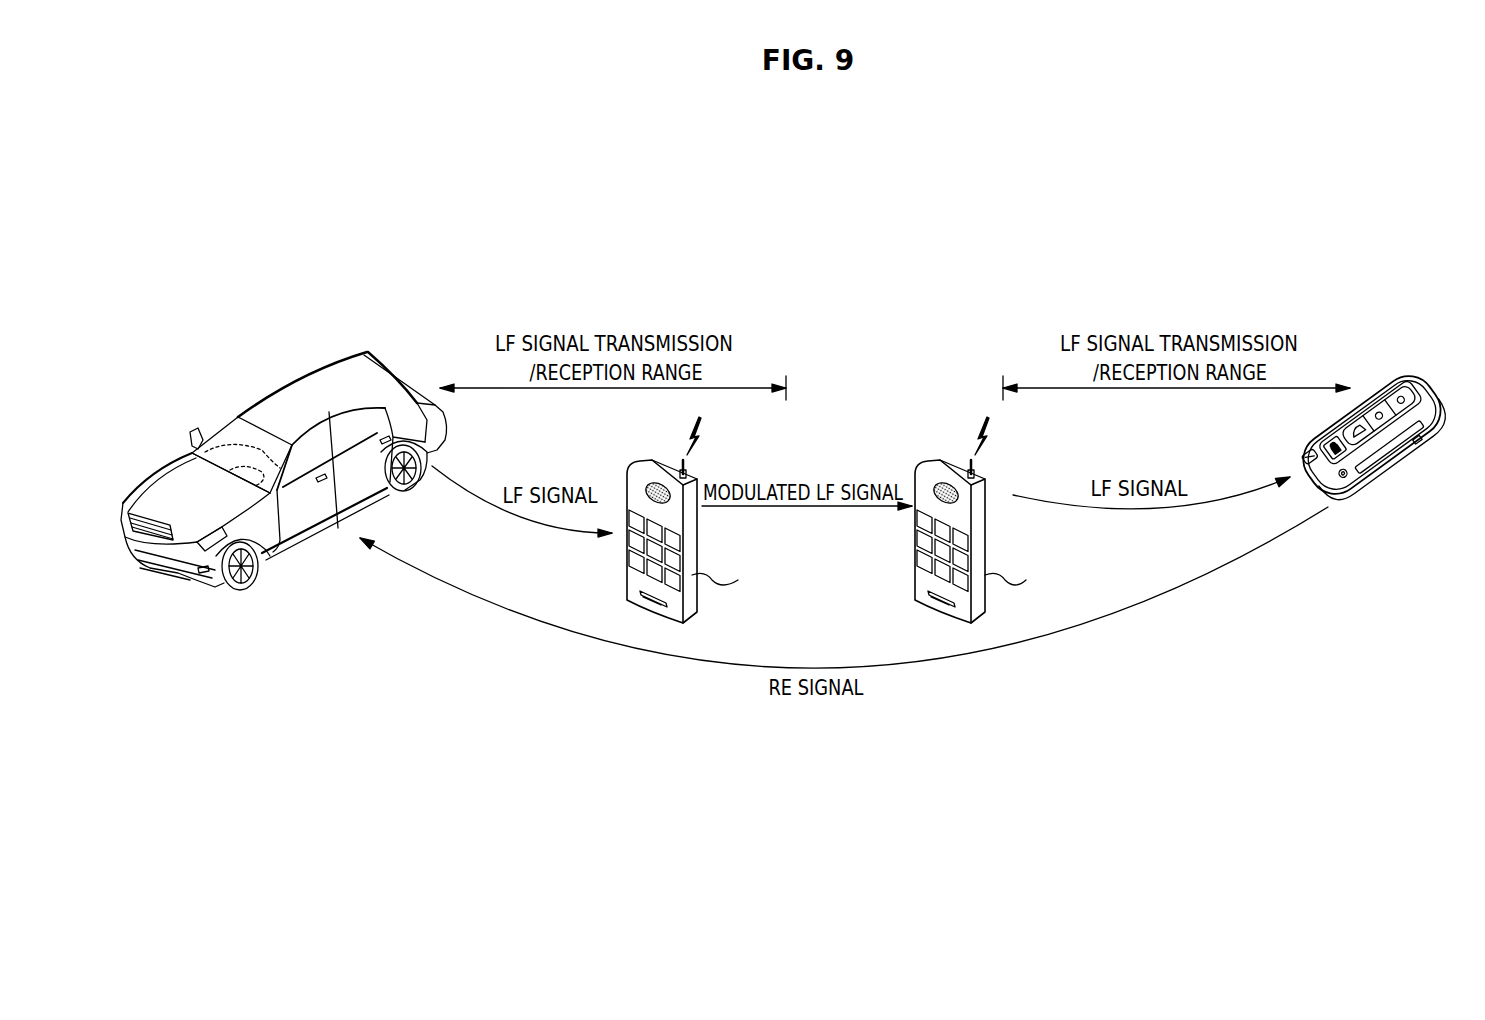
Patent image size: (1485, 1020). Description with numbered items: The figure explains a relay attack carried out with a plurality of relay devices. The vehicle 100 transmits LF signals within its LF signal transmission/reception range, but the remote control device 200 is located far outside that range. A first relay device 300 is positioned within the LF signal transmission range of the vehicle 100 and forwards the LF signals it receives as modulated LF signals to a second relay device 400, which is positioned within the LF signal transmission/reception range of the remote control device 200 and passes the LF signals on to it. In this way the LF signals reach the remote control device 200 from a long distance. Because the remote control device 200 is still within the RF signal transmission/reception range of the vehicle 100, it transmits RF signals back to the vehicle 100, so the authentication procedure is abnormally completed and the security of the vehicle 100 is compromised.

The vehicle 100 is at (280, 392).
The remote control device 200 is at (1397, 378).
The first relay device (relay1) 300 is at (633, 580).
The second relay device (relay2) 400 is at (920, 582).